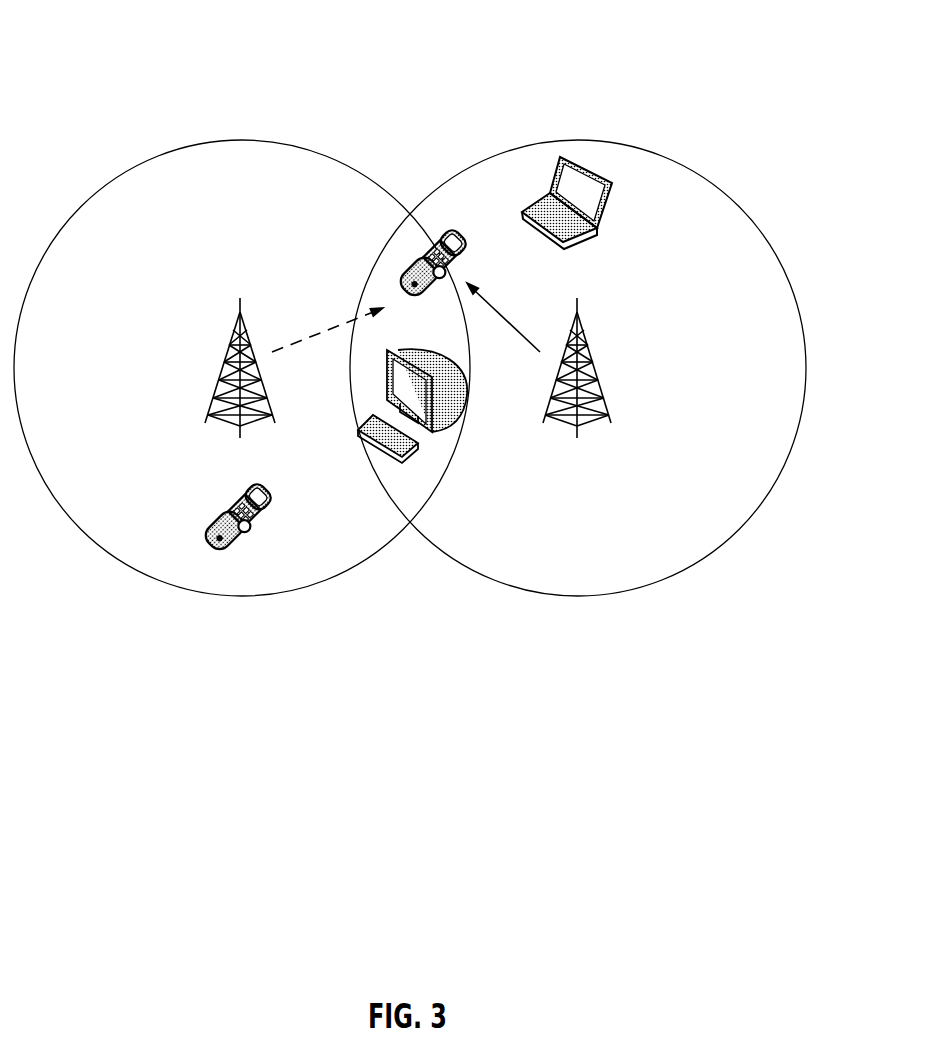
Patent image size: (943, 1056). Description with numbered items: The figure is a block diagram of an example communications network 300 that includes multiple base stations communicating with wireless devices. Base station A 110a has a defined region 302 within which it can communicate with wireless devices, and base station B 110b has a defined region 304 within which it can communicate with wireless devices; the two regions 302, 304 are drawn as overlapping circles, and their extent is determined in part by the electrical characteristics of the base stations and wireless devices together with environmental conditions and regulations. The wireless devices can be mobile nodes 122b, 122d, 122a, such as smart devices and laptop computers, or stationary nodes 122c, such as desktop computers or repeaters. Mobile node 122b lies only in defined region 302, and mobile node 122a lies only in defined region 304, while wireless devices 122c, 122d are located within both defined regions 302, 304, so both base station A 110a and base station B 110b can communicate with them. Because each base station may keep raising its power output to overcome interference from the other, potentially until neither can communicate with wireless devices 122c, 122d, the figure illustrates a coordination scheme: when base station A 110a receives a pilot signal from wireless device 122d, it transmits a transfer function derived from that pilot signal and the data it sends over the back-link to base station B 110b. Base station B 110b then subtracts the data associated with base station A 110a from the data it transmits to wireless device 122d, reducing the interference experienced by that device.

The communications network 300 is at (126, 58).
The defined region 302 is at (207, 143).
The defined region 304 is at (780, 257).
The base station A 110a is at (223, 363).
The base station B 110b is at (593, 377).
The mobile node 122a is at (590, 168).
The mobile node 122b is at (218, 553).
The stationary node 122c is at (410, 455).
The mobile node 122d is at (443, 237).